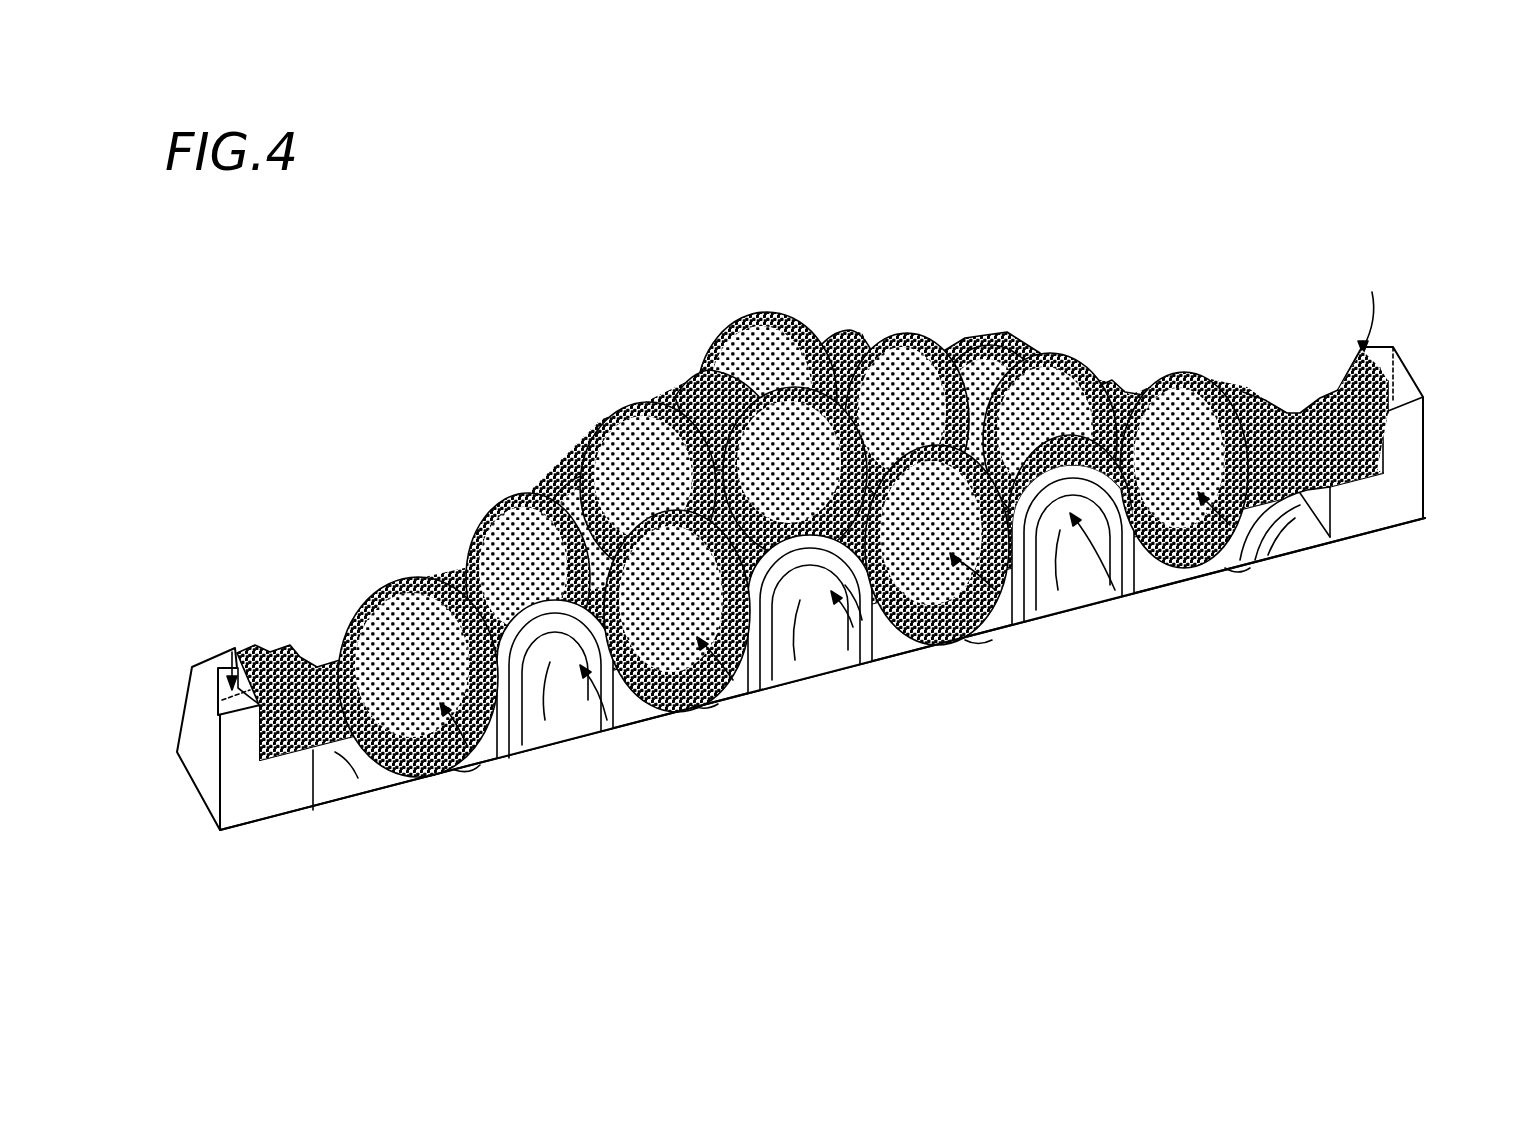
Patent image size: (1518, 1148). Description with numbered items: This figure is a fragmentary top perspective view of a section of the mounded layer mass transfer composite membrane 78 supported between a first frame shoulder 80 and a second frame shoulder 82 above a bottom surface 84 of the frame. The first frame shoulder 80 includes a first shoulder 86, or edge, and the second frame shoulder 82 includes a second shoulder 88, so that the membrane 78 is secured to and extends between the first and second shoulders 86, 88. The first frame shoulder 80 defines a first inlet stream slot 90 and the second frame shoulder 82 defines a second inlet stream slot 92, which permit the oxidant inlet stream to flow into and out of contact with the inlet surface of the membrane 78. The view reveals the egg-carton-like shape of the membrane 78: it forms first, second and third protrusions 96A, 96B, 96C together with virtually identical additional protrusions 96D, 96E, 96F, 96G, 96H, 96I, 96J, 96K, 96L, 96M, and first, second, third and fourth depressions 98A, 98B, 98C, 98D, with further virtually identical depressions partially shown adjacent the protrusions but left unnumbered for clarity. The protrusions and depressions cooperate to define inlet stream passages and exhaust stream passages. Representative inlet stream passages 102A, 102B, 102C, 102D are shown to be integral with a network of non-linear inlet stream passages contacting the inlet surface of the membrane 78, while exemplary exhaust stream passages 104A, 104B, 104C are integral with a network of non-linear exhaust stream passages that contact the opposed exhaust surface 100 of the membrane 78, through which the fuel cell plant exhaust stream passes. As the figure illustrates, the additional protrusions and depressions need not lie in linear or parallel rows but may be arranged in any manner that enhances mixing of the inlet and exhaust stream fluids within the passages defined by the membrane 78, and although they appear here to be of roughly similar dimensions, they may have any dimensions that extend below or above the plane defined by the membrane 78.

The mounded layer composite membrane 78 is at (280, 665).
The first frame shoulder 80 is at (230, 800).
The second frame shoulder 82 is at (1397, 490).
The bottom surface 84 is at (862, 620).
The first shoulder 86 is at (265, 790).
The second shoulder 88 is at (1333, 483).
The first inlet stream slot 90 is at (232, 650).
The second inlet stream slot 92 is at (1372, 292).
The first protrusion 96A is at (640, 705).
The second protrusion 96B is at (805, 590).
The third protrusion 96C is at (1067, 507).
The protrusion 96D is at (405, 590).
The protrusion 96E is at (517, 490).
The protrusion 96F is at (565, 478).
The protrusion 96G is at (613, 410).
The protrusion 96H is at (706, 375).
The protrusion 96I is at (750, 313).
The protrusion 96J is at (905, 333).
The protrusion 96K is at (983, 408).
The protrusion 96L is at (1047, 353).
The protrusion 96M is at (1186, 372).
The first depression 98A is at (467, 767).
The second depression 98B is at (700, 708).
The third depression 98C is at (978, 640).
The fourth depression 98D is at (1240, 568).
The exhaust surface 100 is at (378, 770).
The inlet stream passage 102A is at (460, 760).
The inlet stream passage 102B is at (725, 660).
The inlet stream passage 102C is at (1000, 600).
The inlet stream passage 102D is at (1255, 560).
The exhaust stream passage 104A is at (610, 725).
The exhaust stream passage 104B is at (858, 632).
The exhaust stream passage 104C is at (1118, 600).